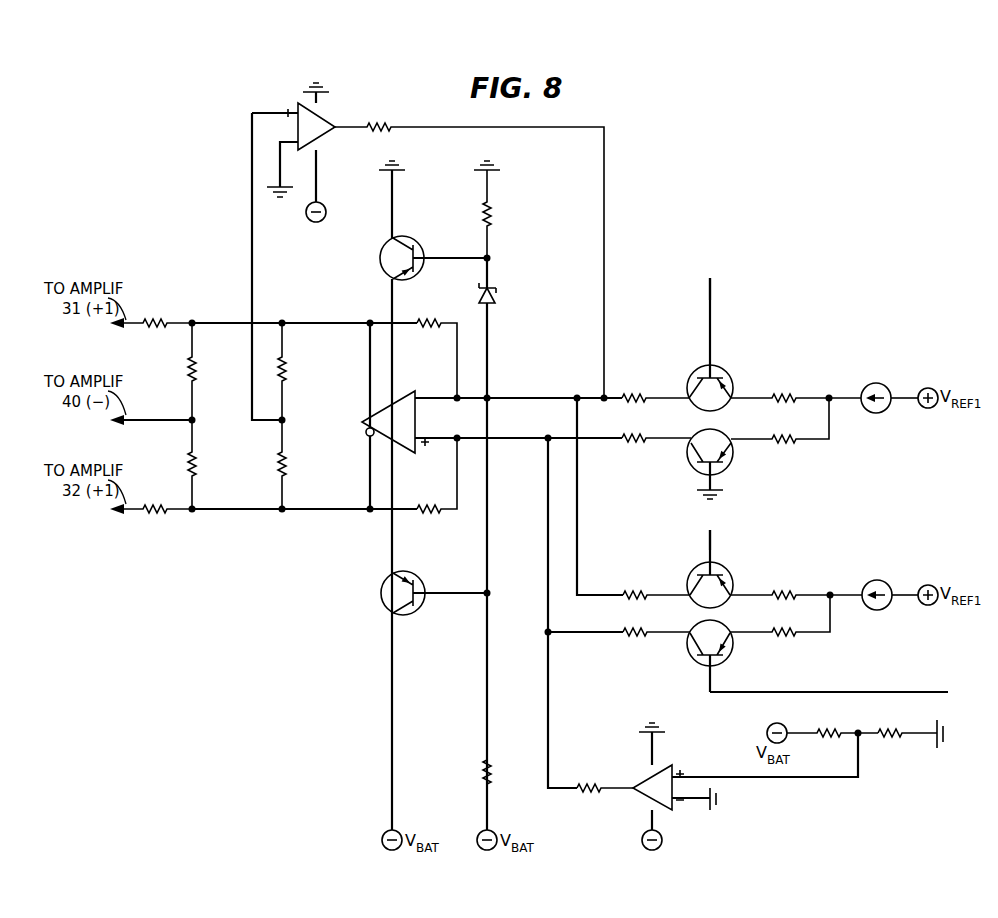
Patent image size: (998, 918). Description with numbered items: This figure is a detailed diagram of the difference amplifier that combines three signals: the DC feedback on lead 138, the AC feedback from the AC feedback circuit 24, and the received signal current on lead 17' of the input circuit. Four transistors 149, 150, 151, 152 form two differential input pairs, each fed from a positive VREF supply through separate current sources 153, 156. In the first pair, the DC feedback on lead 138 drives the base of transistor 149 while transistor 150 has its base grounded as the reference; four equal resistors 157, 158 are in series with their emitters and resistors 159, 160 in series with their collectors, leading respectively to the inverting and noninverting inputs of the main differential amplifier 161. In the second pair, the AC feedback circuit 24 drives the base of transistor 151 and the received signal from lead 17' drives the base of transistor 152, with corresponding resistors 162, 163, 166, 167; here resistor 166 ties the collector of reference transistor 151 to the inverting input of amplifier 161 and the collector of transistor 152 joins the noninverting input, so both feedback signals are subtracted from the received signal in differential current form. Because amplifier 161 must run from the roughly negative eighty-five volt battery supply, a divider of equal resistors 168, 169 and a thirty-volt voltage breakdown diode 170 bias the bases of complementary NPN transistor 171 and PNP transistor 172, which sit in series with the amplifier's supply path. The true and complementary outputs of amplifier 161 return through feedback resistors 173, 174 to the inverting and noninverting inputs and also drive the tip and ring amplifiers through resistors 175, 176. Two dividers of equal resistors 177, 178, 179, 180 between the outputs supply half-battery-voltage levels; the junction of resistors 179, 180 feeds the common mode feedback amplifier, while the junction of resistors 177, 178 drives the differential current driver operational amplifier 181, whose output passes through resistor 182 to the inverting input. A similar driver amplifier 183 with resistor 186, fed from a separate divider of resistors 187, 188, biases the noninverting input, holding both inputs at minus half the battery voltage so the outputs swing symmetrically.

The lead 138 is at (716, 306).
The AC feedback circuit 24 is at (714, 552).
The lead 17' is at (829, 678).
The transistor 149 is at (722, 344).
The transistor 150 is at (722, 464).
The transistor 151 is at (722, 569).
The transistor 152 is at (704, 656).
The current source 153 is at (889, 388).
The current source 156 is at (890, 584).
The resistor 157 is at (796, 386).
The resistor 158 is at (780, 432).
The resistor 159 is at (655, 386).
The resistor 160 is at (656, 450).
The amplifier 161 is at (422, 420).
The resistor 162 is at (796, 583).
The resistor 163 is at (780, 629).
The resistor 166 is at (655, 583).
The resistor 167 is at (655, 646).
The resistor 168 is at (505, 214).
The resistor 169 is at (473, 765).
The voltage breakdown diode 170 is at (503, 544).
The NPN transistor 171 is at (421, 257).
The PNP transistor 172 is at (421, 592).
The feedback resistor 173 is at (437, 347).
The feedback resistor 174 is at (437, 475).
The resistor 175 is at (157, 310).
The resistor 176 is at (157, 496).
The resistor 177 is at (299, 371).
The resistor 178 is at (299, 464).
The resistor 179 is at (209, 371).
The resistor 180 is at (209, 464).
The differential current driver operational amplifier 181 is at (325, 136).
The resistor 182 is at (469, 249).
The amplifier 183 is at (643, 801).
The resistor 186 is at (604, 776).
The resistor 187 is at (832, 721).
The resistor 188 is at (910, 726).